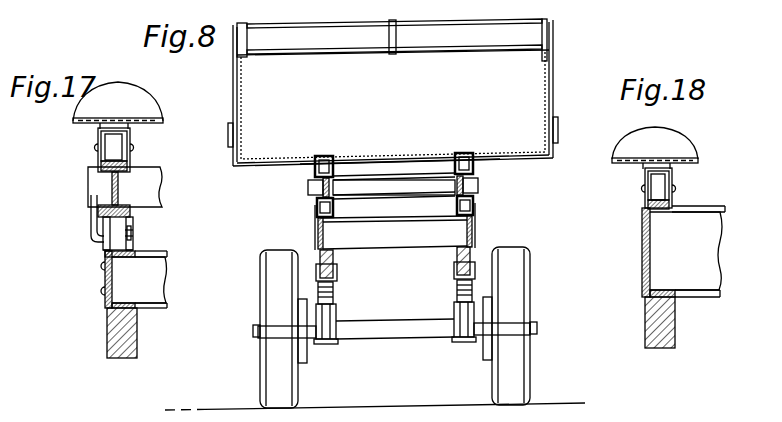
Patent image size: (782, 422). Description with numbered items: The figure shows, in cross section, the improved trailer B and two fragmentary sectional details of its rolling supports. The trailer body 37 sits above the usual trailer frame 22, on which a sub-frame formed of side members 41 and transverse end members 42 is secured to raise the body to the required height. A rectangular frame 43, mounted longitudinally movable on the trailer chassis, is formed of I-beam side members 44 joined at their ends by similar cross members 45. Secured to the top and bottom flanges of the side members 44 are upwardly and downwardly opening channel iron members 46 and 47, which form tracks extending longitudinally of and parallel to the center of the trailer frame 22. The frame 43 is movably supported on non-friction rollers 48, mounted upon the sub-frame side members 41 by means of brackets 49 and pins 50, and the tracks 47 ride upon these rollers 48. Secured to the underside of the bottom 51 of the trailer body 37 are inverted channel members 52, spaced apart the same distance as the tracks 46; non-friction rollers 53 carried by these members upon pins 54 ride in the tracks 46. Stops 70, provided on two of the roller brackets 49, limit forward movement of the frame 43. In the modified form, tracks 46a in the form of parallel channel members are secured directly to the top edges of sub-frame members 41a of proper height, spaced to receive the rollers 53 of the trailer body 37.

In FIG. 8, the trailer B is at (416, 92).
In FIG. 8, the trailer body 37 is at (545, 85).
In FIG. 8, the bottom 51 is at (512, 158).
In FIG. 17, the bottom 51 is at (142, 130).
In FIG. 18, the bottom 51 is at (684, 162).
In FIG. 17, the channel members 52 is at (103, 129).
In FIG. 18, the channel members 52 is at (675, 181).
In FIG. 17, the rollers 53 is at (110, 147).
In FIG. 18, the rollers 53 is at (656, 184).
In FIG. 17, the pins 54 is at (95, 146).
In FIG. 17, the channel iron members 46 is at (130, 163).
In FIG. 18, the tracks 46a is at (650, 204).
In FIG. 8, the frame 43 is at (478, 187).
In FIG. 17, the frame 43 is at (136, 183).
In FIG. 8, the side members 44 is at (320, 188).
In FIG. 17, the side members 44 is at (112, 190).
In FIG. 8, the cross members 45 is at (400, 190).
In FIG. 17, the stops 70 is at (93, 203).
In FIG. 17, the channel iron members 47 is at (131, 215).
In FIG. 17, the rollers 48 is at (118, 240).
In FIG. 17, the brackets 49 is at (103, 253).
In FIG. 17, the pins 50 is at (132, 232).
In FIG. 8, the side members 41 is at (325, 238).
In FIG. 17, the side members 41 is at (108, 283).
In FIG. 18, the sub-frame members 41a is at (645, 256).
In FIG. 8, the transverse end members 42 is at (397, 240).
In FIG. 17, the transverse end members 42 is at (143, 281).
In FIG. 17, the trailer frame 22 is at (121, 352).
In FIG. 18, the trailer frame 22 is at (661, 340).